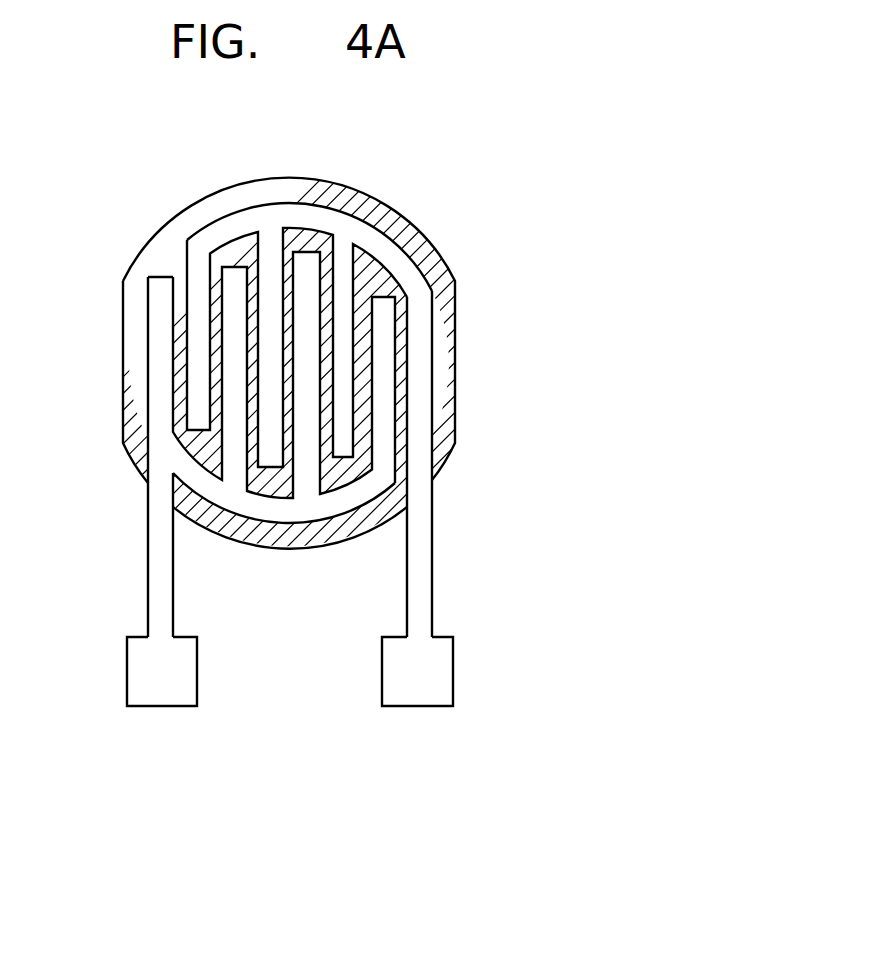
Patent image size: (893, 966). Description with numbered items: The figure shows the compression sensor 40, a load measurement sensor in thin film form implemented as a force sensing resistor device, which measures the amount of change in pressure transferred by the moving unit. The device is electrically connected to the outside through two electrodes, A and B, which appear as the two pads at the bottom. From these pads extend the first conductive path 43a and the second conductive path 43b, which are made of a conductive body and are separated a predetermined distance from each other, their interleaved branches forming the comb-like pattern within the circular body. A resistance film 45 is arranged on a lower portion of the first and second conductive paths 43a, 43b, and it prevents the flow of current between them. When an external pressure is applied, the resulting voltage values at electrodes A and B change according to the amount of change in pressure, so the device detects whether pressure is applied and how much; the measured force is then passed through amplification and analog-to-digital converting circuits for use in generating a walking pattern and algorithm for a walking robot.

The compression sensor 40 is at (442, 448).
The resistance film 45 is at (460, 382).
The first conductive path 43a is at (157, 598).
The second conductive path 43b is at (425, 578).